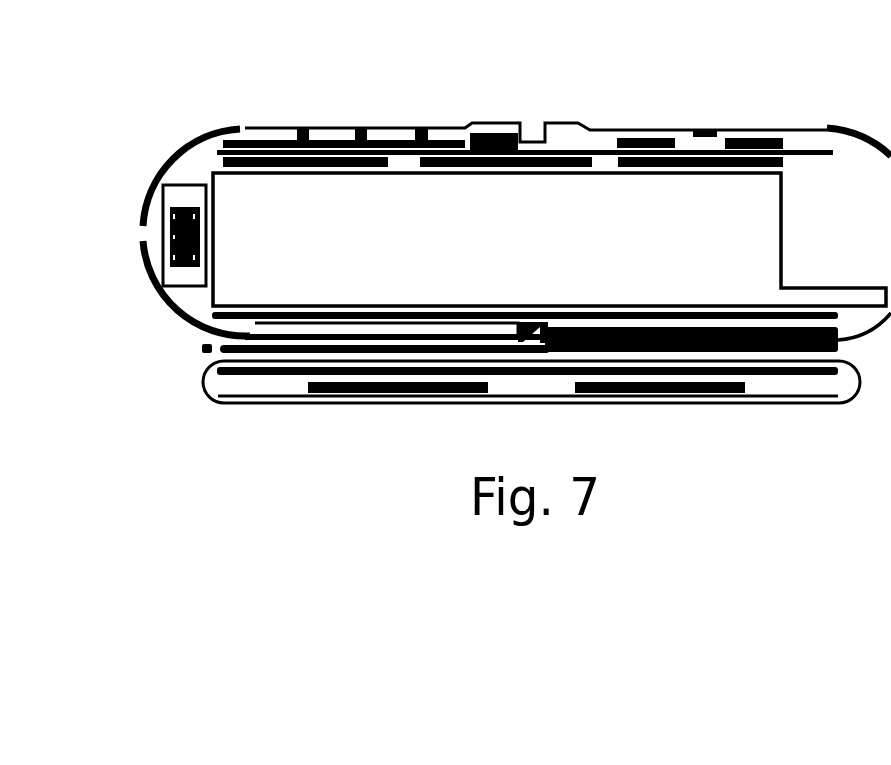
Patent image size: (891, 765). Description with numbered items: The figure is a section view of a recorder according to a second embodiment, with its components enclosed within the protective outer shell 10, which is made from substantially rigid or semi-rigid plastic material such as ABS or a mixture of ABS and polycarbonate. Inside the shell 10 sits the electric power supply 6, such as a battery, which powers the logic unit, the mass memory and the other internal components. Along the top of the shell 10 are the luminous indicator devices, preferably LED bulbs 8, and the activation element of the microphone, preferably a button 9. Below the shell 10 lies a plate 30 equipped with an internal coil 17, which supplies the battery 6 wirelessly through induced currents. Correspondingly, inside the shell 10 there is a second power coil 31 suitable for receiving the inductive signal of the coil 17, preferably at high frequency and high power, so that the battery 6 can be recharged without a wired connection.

The protective outer shell 10 is at (240, 126).
The LED bulbs 8 is at (421, 130).
The button 9 is at (705, 130).
The electric power supply 6 is at (545, 253).
The second power coil 31 is at (178, 313).
The coil 17 is at (200, 367).
The plate 30 is at (203, 383).